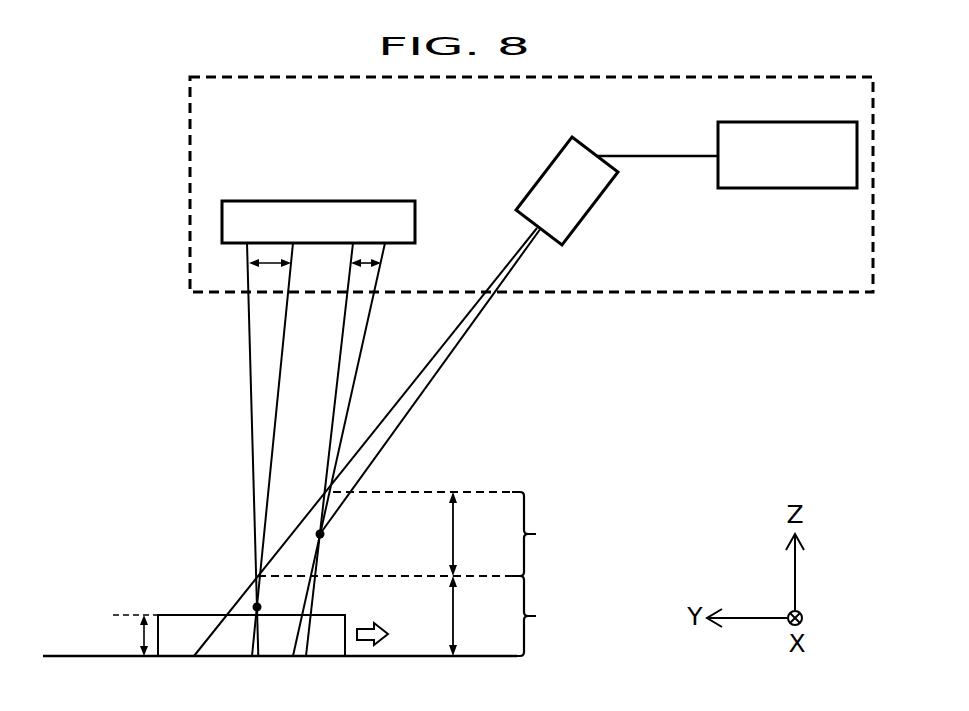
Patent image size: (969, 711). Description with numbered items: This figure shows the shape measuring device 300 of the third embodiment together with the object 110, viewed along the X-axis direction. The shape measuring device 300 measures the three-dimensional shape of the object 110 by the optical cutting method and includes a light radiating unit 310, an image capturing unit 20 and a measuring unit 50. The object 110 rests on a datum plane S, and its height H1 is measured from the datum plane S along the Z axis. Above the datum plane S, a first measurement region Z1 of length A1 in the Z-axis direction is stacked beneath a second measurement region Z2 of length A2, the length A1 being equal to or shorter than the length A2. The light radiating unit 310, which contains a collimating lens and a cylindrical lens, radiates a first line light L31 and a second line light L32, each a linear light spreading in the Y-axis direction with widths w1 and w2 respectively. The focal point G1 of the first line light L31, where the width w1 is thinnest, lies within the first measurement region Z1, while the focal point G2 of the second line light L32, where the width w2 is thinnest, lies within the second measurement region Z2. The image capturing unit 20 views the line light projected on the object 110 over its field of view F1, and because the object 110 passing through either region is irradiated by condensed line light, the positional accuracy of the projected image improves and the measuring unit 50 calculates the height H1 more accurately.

The shape measuring device 300 is at (708, 293).
The light radiating unit 310 is at (342, 199).
The image capturing unit 20 is at (540, 175).
The measuring unit 50 is at (776, 190).
The first line light L31 is at (252, 388).
The second line light L32 is at (340, 387).
The width of the first line light w1 is at (254, 268).
The width of the second line light w2 is at (366, 264).
The imaging field of view F1 is at (443, 365).
The focal point of the first line light G1 is at (256, 603).
The focal point of the second line light G2 is at (323, 535).
The object 110 is at (200, 613).
The datum plane S is at (86, 655).
The height of the object H1 is at (131, 635).
The length of the first measurement region A1 is at (472, 616).
The length of the second measurement region A2 is at (472, 534).
The first measurement region Z1 is at (542, 616).
The second measurement region Z2 is at (542, 534).